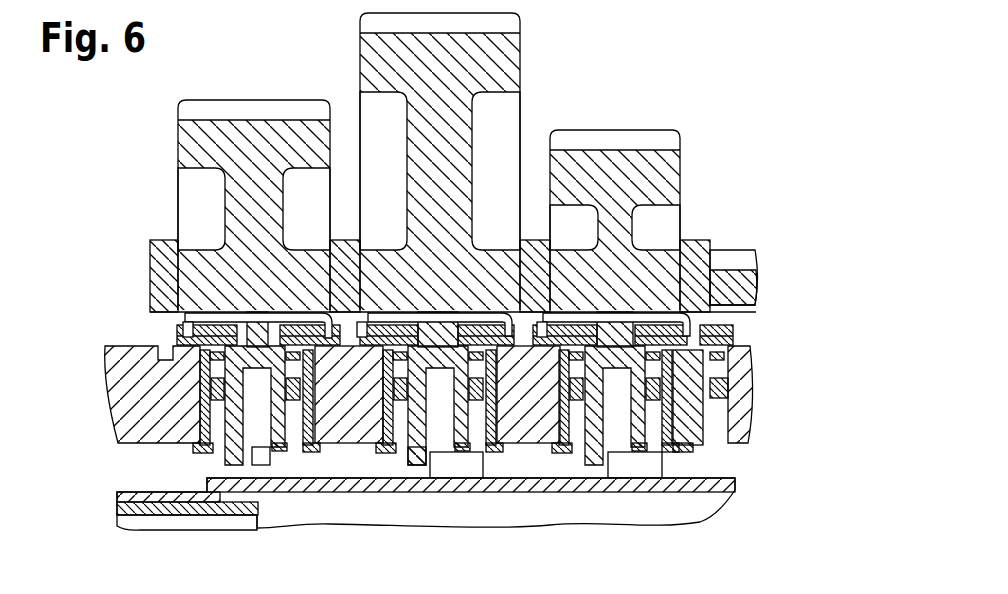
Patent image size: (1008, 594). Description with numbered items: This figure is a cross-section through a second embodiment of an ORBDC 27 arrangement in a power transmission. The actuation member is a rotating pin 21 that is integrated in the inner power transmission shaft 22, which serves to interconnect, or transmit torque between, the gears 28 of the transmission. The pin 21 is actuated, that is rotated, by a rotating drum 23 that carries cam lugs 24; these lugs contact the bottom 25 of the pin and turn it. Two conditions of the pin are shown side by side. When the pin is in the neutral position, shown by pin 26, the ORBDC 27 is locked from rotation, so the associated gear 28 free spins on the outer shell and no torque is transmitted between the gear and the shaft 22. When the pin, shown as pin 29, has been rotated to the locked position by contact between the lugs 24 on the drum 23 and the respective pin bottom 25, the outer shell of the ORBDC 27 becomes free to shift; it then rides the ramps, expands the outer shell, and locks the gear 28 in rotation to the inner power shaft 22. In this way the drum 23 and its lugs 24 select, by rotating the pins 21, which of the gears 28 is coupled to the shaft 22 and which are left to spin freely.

The rotating pin 21 is at (238, 451).
The inner power transmission shaft 22 is at (130, 386).
The rotating drum 23 is at (738, 483).
The cam lugs 24 is at (456, 470).
The bottom of the pin 25 is at (414, 466).
The pin in neutral position 26 is at (262, 316).
The ORBDC 27 is at (404, 312).
The gear 28 is at (497, 50).
The pin in locked position 29 is at (624, 316).